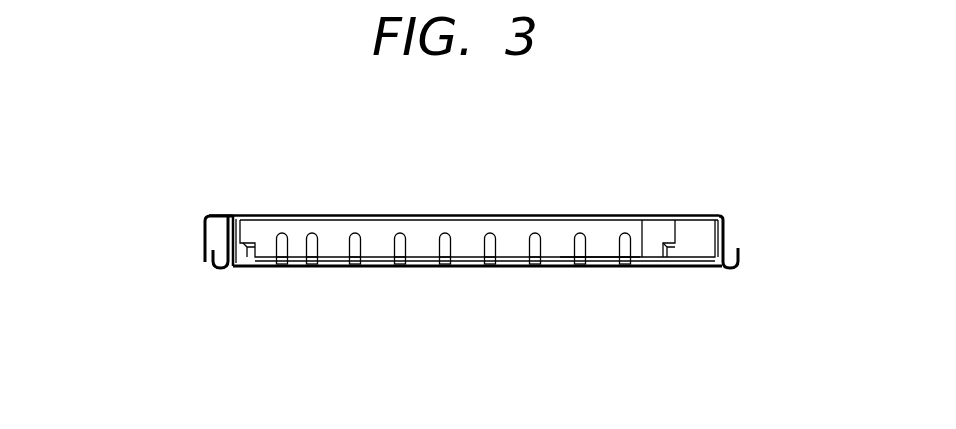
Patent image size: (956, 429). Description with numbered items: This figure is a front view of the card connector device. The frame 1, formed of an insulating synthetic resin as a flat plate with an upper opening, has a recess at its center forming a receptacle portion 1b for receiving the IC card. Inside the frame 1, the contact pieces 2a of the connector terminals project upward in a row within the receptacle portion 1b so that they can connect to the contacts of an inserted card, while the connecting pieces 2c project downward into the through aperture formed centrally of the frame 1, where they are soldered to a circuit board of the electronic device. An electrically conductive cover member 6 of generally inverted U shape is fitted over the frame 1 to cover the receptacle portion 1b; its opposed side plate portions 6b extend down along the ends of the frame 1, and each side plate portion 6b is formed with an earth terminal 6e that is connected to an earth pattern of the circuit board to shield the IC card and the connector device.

The frame 1 is at (678, 265).
The receptacle portion 1b is at (600, 238).
The contact pieces 2a is at (358, 240).
The connecting pieces 2c is at (357, 268).
The cover member 6 is at (513, 213).
The side plate portions 6b is at (203, 230).
The earth terminals 6e is at (215, 268).